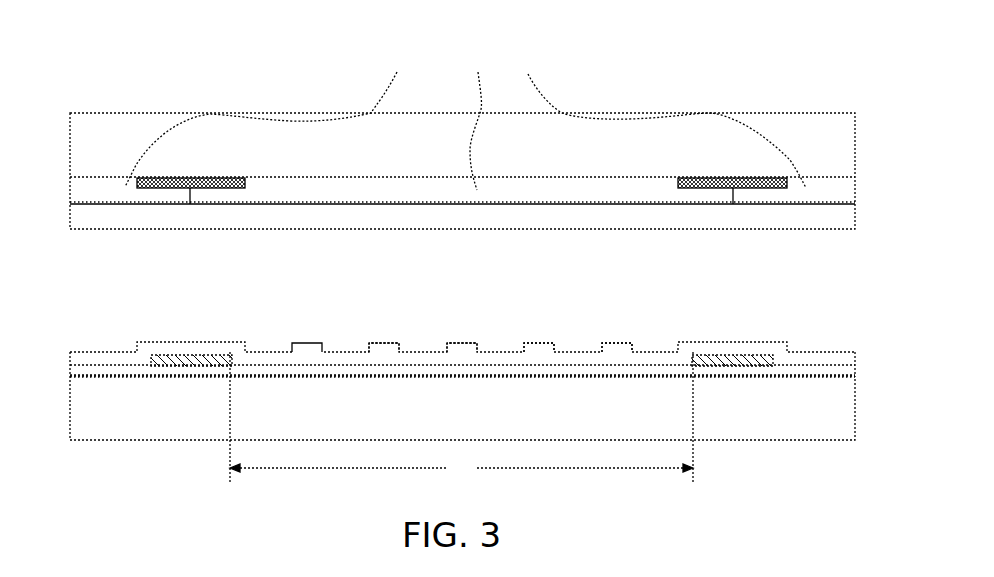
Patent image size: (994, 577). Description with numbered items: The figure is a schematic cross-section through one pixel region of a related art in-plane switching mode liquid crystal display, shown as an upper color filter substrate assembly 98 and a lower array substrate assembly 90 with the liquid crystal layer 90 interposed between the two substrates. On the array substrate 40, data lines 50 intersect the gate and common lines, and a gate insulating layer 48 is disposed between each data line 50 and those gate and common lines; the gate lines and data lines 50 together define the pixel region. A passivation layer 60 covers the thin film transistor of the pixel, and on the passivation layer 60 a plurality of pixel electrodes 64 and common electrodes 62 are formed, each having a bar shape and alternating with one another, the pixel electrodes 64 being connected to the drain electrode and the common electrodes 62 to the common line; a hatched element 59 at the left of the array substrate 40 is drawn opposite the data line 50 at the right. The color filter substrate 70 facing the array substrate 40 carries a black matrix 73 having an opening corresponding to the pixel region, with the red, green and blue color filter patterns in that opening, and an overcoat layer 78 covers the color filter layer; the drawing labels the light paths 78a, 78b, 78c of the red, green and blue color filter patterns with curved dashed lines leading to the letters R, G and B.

The color filter substrate assembly 98 is at (462, 120).
The color filter substrate 70 is at (840, 169).
The black matrix 73 is at (732, 178).
The overcoat layer 78 is at (465, 154).
The red light path 78a is at (472, 124).
The green light path 78b is at (663, 124).
The blue light path 78c is at (267, 122).
The liquid crystal layer 90 is at (445, 370).
The array substrate 40 is at (839, 429).
The gate insulating layer 48 is at (518, 377).
The passivation layer 60 is at (424, 366).
The common electrodes 62 is at (306, 343).
The pixel electrodes 64 is at (385, 343).
The left light emitting diode 59 is at (190, 366).
The data lines 50 is at (733, 366).